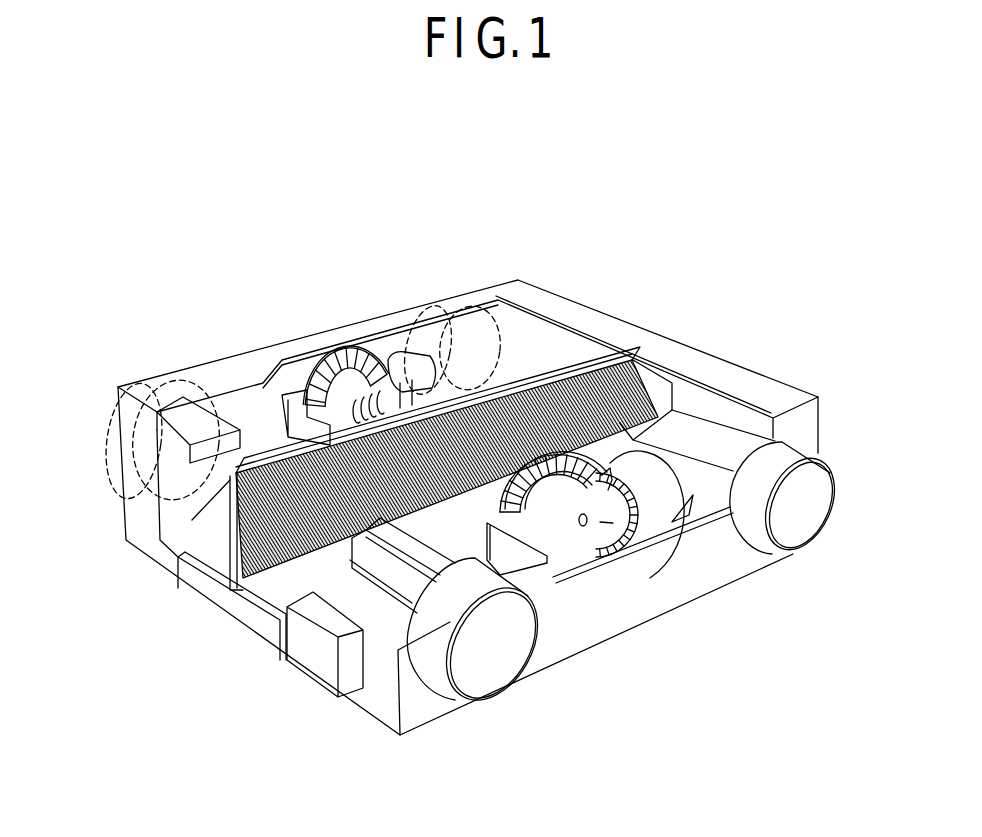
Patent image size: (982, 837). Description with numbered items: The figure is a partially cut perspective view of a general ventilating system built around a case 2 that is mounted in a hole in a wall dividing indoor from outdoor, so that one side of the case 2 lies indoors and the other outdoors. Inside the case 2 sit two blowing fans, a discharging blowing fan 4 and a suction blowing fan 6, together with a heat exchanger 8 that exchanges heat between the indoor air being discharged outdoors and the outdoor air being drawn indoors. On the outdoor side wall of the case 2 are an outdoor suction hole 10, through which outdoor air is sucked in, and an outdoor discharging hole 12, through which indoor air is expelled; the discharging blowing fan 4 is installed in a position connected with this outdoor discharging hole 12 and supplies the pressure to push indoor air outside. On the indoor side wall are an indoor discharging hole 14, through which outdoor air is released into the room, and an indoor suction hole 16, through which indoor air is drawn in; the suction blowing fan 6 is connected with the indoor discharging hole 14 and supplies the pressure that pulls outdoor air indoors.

The case 2 is at (760, 386).
The discharging blowing fan 4 is at (318, 378).
The suction blowing fan 6 is at (598, 525).
The heat exchanger 8 is at (618, 388).
The outdoor suction hole 10 is at (110, 431).
The outdoor discharging hole 12 is at (412, 333).
The indoor discharging hole 14 is at (533, 626).
The indoor suction hole 16 is at (815, 484).